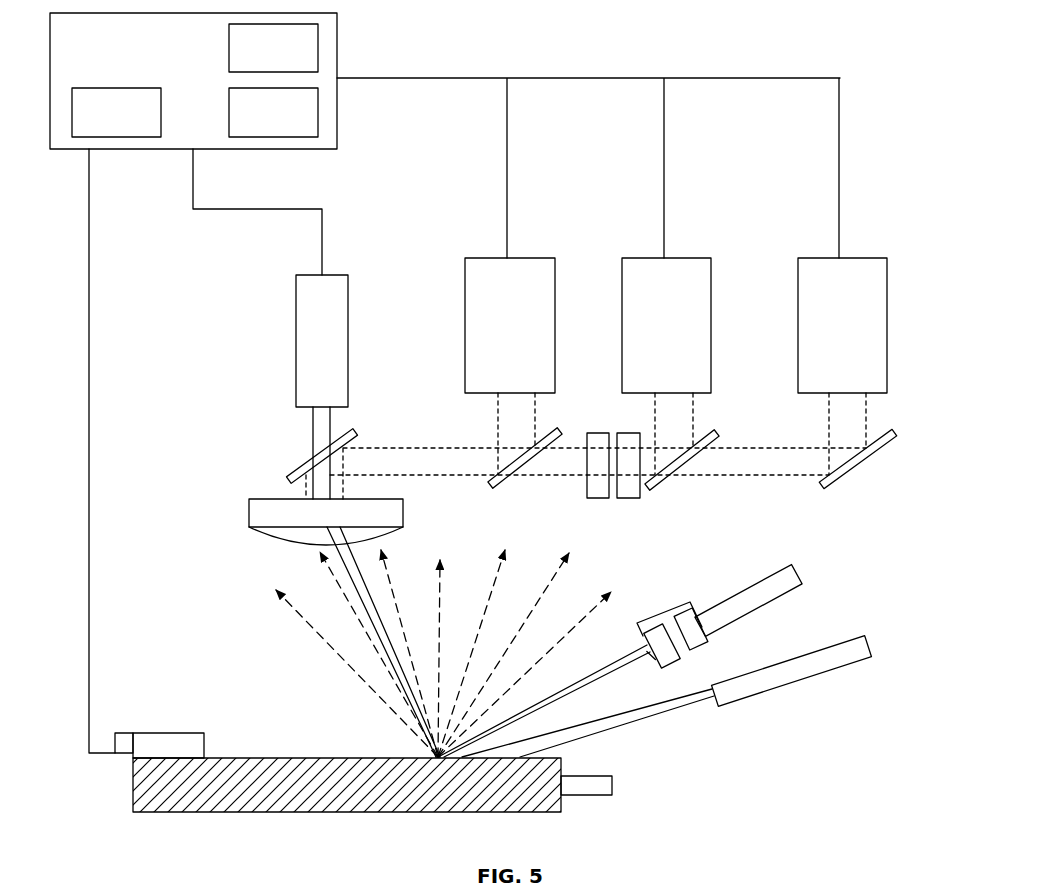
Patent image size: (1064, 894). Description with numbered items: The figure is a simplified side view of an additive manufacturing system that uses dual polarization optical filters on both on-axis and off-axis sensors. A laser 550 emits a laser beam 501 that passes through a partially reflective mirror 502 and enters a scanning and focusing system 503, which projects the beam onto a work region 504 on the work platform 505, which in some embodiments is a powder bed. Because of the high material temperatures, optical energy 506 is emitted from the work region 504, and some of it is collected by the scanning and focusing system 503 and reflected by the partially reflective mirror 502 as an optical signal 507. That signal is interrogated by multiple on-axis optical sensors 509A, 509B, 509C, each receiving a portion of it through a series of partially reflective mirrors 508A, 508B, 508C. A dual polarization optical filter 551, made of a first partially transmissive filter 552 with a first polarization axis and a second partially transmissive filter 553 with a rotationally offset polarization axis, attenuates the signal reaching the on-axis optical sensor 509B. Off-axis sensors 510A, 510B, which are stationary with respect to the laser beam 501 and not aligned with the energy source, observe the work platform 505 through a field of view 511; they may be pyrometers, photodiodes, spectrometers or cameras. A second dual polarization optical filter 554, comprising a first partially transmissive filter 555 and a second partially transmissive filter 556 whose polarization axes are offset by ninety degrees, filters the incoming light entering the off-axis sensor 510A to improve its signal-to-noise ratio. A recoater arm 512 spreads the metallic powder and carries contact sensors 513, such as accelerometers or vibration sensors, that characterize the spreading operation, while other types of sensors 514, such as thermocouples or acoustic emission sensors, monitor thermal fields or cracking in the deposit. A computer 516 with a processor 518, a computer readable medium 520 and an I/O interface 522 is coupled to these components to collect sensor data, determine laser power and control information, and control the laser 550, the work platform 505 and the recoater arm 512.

The computer 516 is at (193, 81).
The processor 518 is at (116, 112).
The computer readable medium 520 is at (273, 112).
The I/O interface 522 is at (273, 48).
The laser 550 is at (322, 341).
The laser beam 501 is at (305, 431).
The partially reflective mirror 502 is at (275, 471).
The scanning and focusing system 503 is at (252, 512).
The work region 504 is at (425, 754).
The work platform 505 is at (347, 785).
The optical energy 506 is at (283, 634).
The optical signal 507 is at (393, 452).
The partially reflective mirror 508A is at (562, 436).
The partially reflective mirror 508B is at (720, 435).
The partially reflective mirror 508C is at (895, 435).
The on-axis optical sensor 509A is at (510, 325).
The on-axis optical sensor 509B is at (666, 325).
The on-axis optical sensor 509C is at (842, 325).
The off-axis sensor 510A is at (796, 575).
The off-axis sensor 510B is at (874, 648).
The field of view 511 is at (565, 720).
The recoater arm 512 is at (168, 744).
The contact sensors 513 is at (119, 733).
The other types of sensors 514 is at (612, 785).
The dual polarization optical filter 551 is at (612, 497).
The first partially transmissive filter 552 is at (595, 483).
The second partially transmissive filter 553 is at (637, 487).
The dual polarization optical filter 554 is at (697, 629).
The first partially transmissive filter 555 is at (681, 658).
The second partially transmissive filter 556 is at (709, 637).